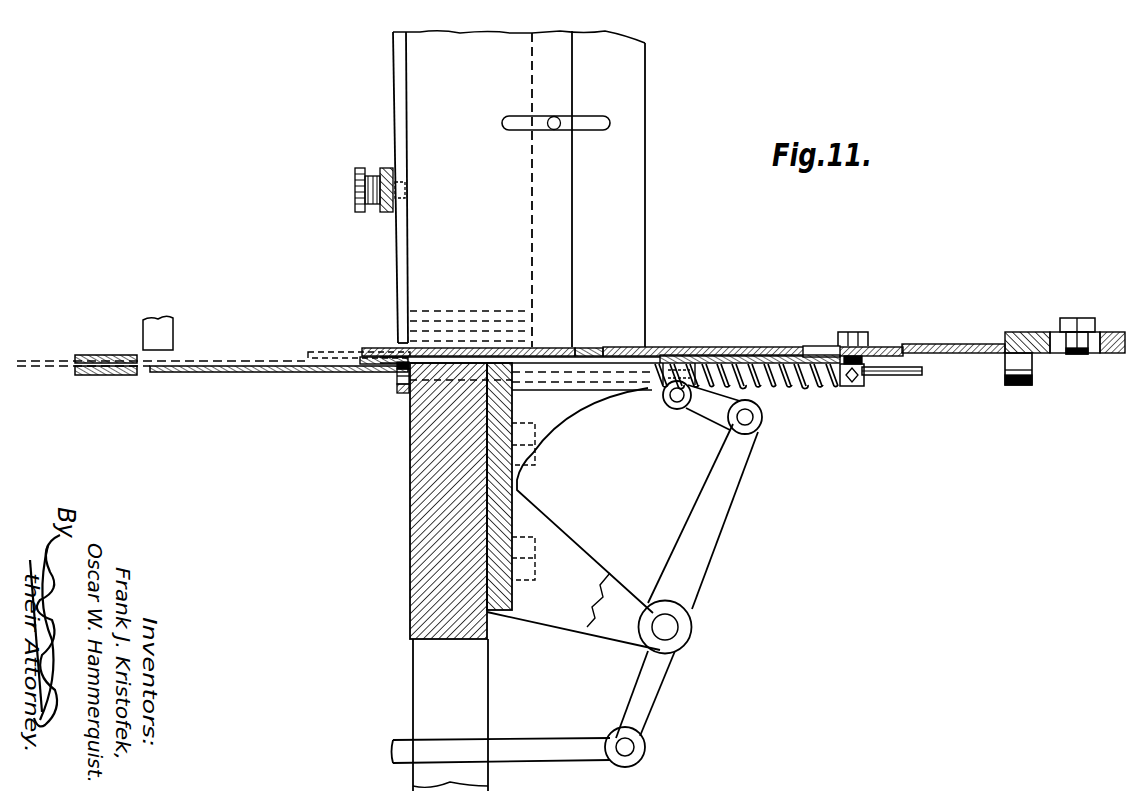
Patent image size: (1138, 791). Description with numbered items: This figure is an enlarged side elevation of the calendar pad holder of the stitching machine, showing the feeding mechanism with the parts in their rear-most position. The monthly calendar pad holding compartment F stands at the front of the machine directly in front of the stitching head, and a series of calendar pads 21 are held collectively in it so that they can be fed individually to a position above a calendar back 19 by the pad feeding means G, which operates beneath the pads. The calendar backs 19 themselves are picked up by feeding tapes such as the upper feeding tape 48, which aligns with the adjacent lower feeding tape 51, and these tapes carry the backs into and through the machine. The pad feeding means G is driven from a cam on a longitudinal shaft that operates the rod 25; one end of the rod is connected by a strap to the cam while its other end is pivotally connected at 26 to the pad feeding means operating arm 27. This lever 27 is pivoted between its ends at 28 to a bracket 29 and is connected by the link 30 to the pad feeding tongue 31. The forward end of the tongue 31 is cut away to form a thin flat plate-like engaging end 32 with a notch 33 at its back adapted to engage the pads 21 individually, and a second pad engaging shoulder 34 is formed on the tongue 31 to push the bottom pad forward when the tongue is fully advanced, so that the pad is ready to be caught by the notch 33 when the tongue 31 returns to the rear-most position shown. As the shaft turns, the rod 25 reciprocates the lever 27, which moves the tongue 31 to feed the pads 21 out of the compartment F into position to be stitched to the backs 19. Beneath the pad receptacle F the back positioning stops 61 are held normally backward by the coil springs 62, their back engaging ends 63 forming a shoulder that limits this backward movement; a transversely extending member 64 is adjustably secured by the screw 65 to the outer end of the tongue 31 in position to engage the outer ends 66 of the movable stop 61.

The monthly calendar pad holding compartment F is at (523, 218).
The pad feeding means G is at (690, 346).
The calendar backs 19 is at (40, 360).
The calendar pads 21 is at (205, 361).
The rod 25 is at (558, 745).
The pivotal connection 26 is at (646, 748).
The pad feeding means operating arm 27 is at (712, 540).
The pivot 28 is at (680, 628).
The bracket 29 is at (561, 615).
The link 30 is at (710, 405).
The pad feeding tongue 31 is at (622, 348).
The plate-like engaging end 32 is at (376, 366).
The notch 33 is at (433, 348).
The pad engaging shoulder 34 is at (584, 347).
The feeding tape 48 is at (93, 355).
The lower feeding tape 51 is at (97, 375).
The back positioning stops 61 is at (878, 387).
The coil springs 62 is at (800, 385).
The back engaging ends 63 is at (400, 393).
The transversely extending member 64 is at (1035, 372).
The screw 65 is at (1075, 330).
The outer ends of the stop 66 is at (925, 370).